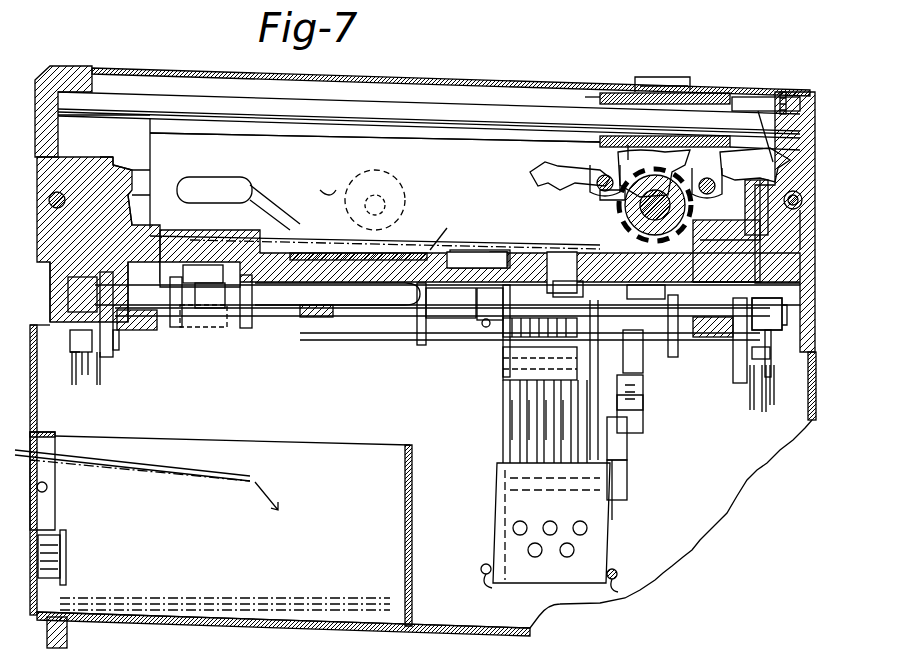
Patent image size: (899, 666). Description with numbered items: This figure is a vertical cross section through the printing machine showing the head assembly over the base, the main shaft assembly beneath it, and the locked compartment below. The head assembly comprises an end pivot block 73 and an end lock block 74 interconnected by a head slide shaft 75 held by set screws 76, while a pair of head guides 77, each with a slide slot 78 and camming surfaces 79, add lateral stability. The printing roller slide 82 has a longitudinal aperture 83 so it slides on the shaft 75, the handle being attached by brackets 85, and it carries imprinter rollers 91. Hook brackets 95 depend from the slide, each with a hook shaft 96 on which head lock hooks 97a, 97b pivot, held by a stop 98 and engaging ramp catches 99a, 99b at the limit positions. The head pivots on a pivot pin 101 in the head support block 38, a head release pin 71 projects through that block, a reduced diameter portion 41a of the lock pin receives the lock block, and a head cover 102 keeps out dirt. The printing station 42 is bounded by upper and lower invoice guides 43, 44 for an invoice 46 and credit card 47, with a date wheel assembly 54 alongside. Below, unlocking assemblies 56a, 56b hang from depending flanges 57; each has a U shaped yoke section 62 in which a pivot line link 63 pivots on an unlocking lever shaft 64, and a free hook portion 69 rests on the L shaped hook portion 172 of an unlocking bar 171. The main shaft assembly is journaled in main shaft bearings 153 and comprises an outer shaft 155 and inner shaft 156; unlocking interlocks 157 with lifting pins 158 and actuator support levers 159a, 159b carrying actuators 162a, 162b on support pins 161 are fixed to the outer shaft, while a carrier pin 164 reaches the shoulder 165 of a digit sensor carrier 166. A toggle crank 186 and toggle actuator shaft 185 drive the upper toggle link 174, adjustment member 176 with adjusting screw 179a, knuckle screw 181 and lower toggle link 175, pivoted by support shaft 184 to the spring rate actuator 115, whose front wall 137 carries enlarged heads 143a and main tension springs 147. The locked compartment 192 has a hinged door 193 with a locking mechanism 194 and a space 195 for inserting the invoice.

The end pivot block 73 is at (52, 70).
The head cover 102 is at (505, 80).
The end lock block 74 is at (806, 90).
The head slide shaft 75 is at (405, 118).
The longitudinal aperture 83 is at (668, 113).
The printing roller slide 82 is at (585, 98).
The brackets 85 is at (658, 77).
The set screws 76 is at (781, 92).
The head lock hook 97a is at (766, 129).
The imprinter rollers 91 is at (395, 182).
The pivot pin 101 is at (60, 192).
The ramp catch 99b is at (94, 157).
The head support block 38 is at (113, 162).
The head release pin 71 is at (112, 185).
The head guides 77 is at (343, 158).
The slide slot 78 is at (325, 180).
The camming surfaces 79 is at (285, 195).
The upper invoice guides 43 is at (232, 230).
The lower invoice guides 44 is at (300, 236).
The invoice 46 is at (352, 240).
The credit card 47 is at (440, 213).
The printing station 42 is at (452, 226).
The date wheel assembly 54 is at (484, 242).
The unlocking lever shaft 64 is at (499, 259).
The actuator support levers 159b is at (172, 275).
The head lock hook 97b is at (532, 170).
The stop 98 is at (596, 164).
The hook shaft 96 is at (704, 189).
The hook brackets 95 is at (600, 195).
The ramp catch 99a is at (734, 210).
The reduced diameter portion 41a is at (803, 218).
The main shaft bearings 153 is at (205, 320).
The inner shaft 156 is at (345, 318).
The digit sensor carriers 166 is at (503, 365).
The unlocking bars 171 is at (112, 272).
The depending flanges 57 is at (55, 292).
The unlocking interlocks 157 is at (113, 338).
The lifting pin 158 is at (120, 345).
The free hook portion 69 is at (72, 345).
The L shaped hook portion 172 is at (72, 372).
The pivot line link 63 is at (85, 378).
The U shaped yoke section 62 is at (100, 382).
The unlocking assembly 56b is at (121, 378).
The unlocking assembly 56a is at (763, 412).
The actuator 162b is at (196, 296).
The actuator 162a is at (680, 285).
The actuator support pin 161 is at (222, 325).
The outer shaft 155 is at (302, 310).
The toggle crank 186 is at (418, 335).
The toggle actuator shaft 185 is at (445, 335).
The carrier pin 164 is at (486, 327).
The shoulder 165 is at (503, 330).
The actuator support levers 159a is at (652, 321).
The upper toggle link 174 is at (643, 366).
The adjustment member 176 is at (643, 420).
The adjusting screw 179a is at (640, 412).
The knuckle screw 181 is at (640, 455).
The lower toggle link 175 is at (640, 478).
The support shaft 184 is at (632, 490).
The front wall 137 is at (605, 506).
The enlarged head 143a is at (575, 550).
The main tension springs 147 is at (480, 572).
The spring rate actuator 115 is at (486, 536).
The locked compartment 192 is at (188, 604).
The space 195 is at (55, 470).
The hinged door 193 is at (58, 520).
The locking mechanism 194 is at (76, 564).